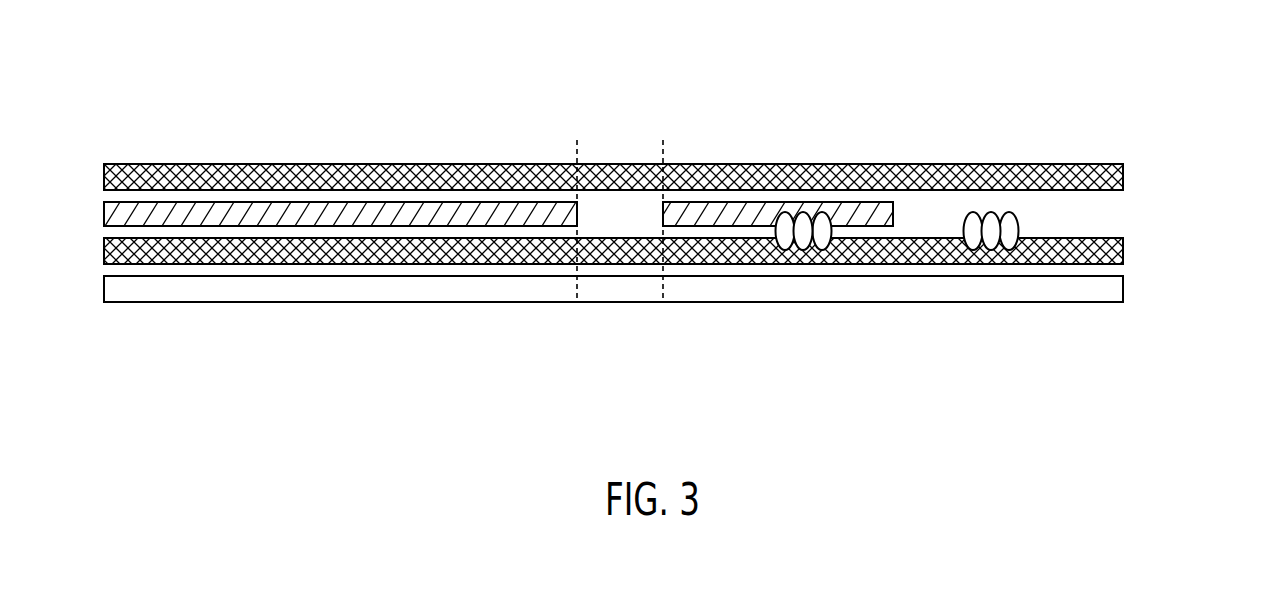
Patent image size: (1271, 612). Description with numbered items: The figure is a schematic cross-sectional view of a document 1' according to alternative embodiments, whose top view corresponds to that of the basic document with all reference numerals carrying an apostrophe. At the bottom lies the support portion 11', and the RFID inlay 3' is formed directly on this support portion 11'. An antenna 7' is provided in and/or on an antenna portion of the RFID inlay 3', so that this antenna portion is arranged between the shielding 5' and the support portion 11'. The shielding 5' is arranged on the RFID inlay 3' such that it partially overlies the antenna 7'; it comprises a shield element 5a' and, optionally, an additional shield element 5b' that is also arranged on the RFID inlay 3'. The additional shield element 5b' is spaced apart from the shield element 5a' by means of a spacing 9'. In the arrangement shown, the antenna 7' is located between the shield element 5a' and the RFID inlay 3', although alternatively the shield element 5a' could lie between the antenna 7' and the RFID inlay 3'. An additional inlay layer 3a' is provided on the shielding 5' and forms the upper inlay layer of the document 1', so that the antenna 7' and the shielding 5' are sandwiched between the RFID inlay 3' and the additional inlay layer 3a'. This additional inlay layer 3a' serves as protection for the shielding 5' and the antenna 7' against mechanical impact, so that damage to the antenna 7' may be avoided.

The document 1' is at (653, 207).
The additional inlay layer 3a' is at (653, 177).
The RFID inlay 3' is at (648, 252).
The shielding 5' is at (498, 151).
The shield element 5a' is at (778, 167).
The additional shield element 5b' is at (340, 167).
The antenna 7' is at (897, 177).
The spacing 9' is at (620, 255).
The support portion 11' is at (653, 292).